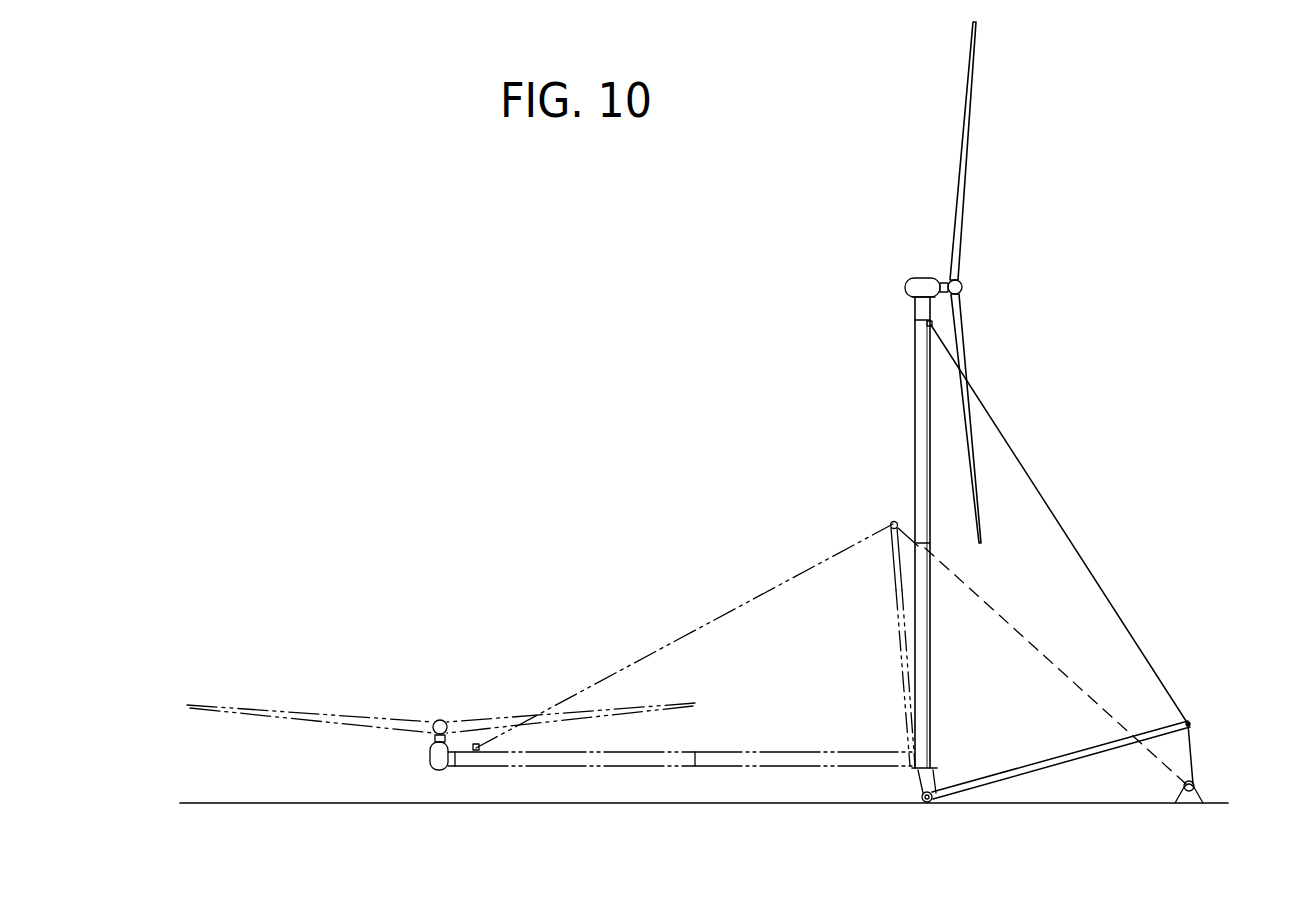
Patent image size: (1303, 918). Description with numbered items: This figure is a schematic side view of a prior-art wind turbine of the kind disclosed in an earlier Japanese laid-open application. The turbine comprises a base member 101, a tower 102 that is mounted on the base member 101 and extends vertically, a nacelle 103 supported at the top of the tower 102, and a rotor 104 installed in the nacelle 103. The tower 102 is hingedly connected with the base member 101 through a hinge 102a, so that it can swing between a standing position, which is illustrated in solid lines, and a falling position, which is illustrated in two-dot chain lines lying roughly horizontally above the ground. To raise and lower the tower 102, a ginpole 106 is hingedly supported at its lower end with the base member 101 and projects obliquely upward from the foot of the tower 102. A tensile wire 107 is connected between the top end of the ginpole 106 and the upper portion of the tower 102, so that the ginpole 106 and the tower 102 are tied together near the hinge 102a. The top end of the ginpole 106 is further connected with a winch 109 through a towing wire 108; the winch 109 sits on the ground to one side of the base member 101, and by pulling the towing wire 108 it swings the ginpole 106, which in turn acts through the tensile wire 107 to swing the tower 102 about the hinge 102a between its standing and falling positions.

The base member 101 is at (916, 795).
The tower 102 is at (920, 415).
The hinge 102a is at (912, 770).
The nacelle 103 is at (920, 282).
The rotor 104 is at (962, 236).
The ginpole 106 is at (1040, 760).
The tensile wire 107 is at (1105, 593).
The towing wire 108 is at (1197, 750).
The winch 109 is at (1200, 787).